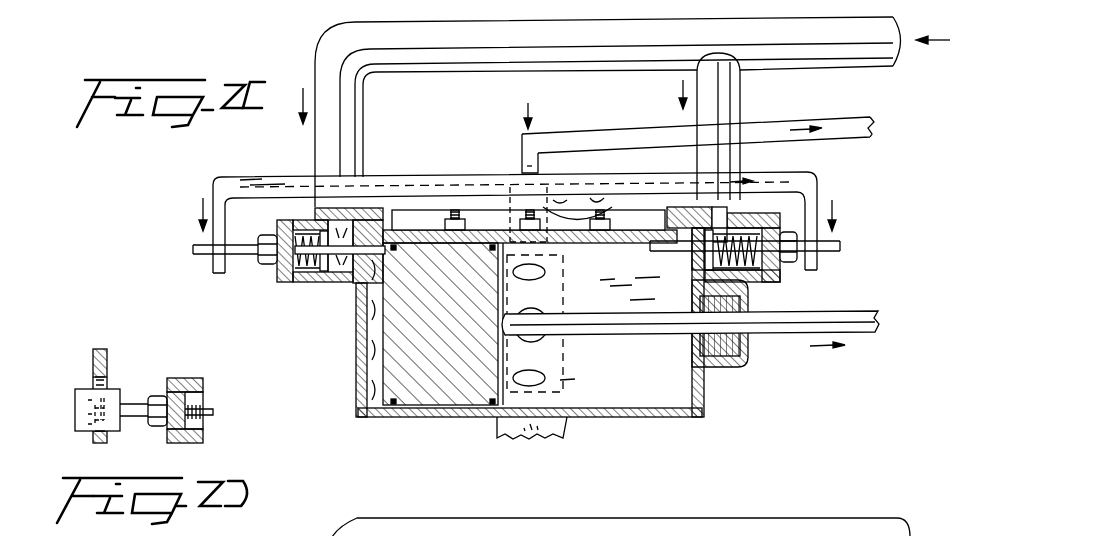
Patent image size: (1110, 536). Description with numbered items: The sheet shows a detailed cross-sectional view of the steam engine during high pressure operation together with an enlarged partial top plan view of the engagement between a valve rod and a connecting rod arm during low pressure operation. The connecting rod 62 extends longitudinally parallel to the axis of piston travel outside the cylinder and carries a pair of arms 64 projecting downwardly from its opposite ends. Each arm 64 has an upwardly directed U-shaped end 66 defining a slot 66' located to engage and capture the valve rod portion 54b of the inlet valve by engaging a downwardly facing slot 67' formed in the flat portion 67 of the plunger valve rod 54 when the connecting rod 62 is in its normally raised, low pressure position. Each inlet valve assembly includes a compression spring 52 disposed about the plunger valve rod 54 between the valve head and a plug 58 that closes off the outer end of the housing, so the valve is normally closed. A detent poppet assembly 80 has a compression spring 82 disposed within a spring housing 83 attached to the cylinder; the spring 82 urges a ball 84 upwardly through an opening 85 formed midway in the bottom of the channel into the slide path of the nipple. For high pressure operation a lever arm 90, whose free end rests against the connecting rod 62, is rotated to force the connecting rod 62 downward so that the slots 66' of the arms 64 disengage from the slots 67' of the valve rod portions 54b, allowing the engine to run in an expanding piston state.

In FIG. 2C, the connecting rod 62 is at (413, 176).
In FIG. 2C, the poppet assembly 80 is at (496, 214).
In FIG. 2C, the compression spring 82 is at (542, 215).
In FIG. 2C, the spring housing 83 is at (505, 245).
In FIG. 2C, the ball 84 is at (548, 186).
In FIG. 2C, the opening 85 is at (582, 207).
In FIG. 2C, the lever arm 90 is at (822, 122).
In FIG. 2D, the compression spring 52 is at (200, 410).
In FIG. 2D, the plunger valve rod 54 is at (214, 413).
In FIG. 2D, the valve rod portion 54b is at (135, 404).
In FIG. 2D, the plug 58 is at (173, 397).
In FIG. 2D, the arm 64 is at (104, 363).
In FIG. 2D, the U-shaped end 66 is at (72, 441).
In FIG. 2D, the slot 66' is at (80, 357).
In FIG. 2D, the flat portion 67 is at (77, 392).
In FIG. 2D, the slot 67' is at (69, 403).